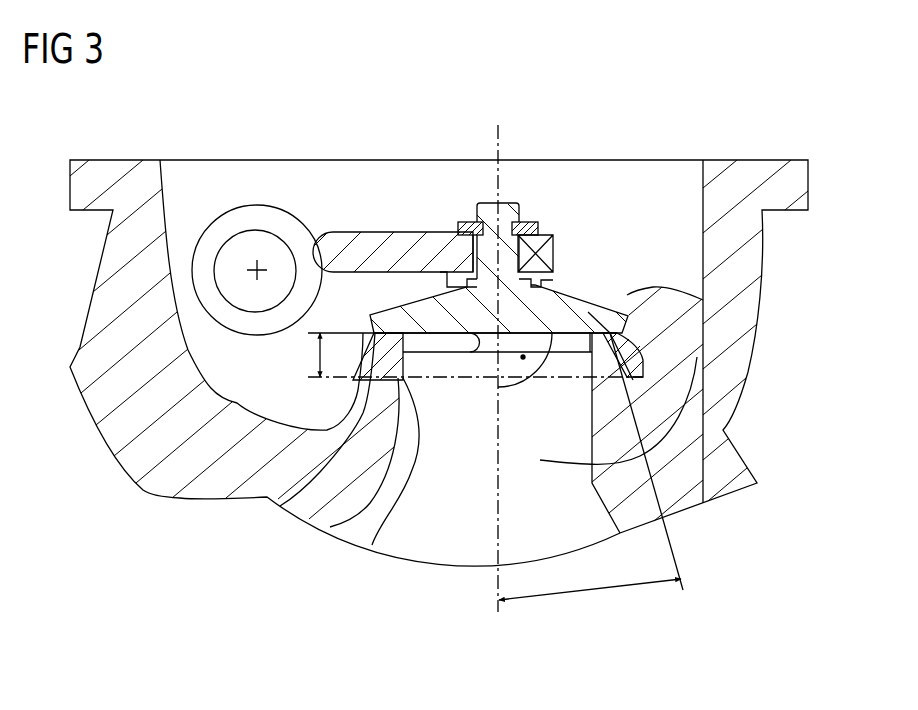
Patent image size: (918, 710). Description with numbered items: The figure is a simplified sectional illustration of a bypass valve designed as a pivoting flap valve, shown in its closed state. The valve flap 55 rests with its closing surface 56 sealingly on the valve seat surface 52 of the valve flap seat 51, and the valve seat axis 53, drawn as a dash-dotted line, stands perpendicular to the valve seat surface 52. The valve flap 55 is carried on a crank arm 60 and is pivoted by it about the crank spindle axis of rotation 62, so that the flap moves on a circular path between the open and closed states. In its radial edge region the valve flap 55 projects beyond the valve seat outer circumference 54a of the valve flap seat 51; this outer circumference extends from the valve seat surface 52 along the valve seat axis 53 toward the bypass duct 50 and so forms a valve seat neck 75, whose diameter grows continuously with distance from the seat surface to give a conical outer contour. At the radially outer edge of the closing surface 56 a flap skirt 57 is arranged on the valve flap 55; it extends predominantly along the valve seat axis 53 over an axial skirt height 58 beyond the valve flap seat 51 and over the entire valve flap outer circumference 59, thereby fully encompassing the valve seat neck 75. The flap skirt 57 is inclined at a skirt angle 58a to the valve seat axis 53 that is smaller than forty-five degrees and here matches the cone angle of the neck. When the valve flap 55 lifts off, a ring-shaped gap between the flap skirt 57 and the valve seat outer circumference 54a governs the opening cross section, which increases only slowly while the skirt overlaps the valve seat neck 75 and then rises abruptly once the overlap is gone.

The bypass duct 50 is at (724, 432).
The valve flap seat 51 is at (470, 353).
The valve seat surface 52 is at (703, 300).
The valve seat axis 53 is at (497, 580).
The valve seat outer circumference 54a is at (632, 340).
The valve flap 55 is at (540, 317).
The closing surface 56 is at (424, 354).
The flap skirt 57 is at (318, 418).
The skirt height 58 is at (320, 355).
The skirt angle 58a is at (587, 593).
The valve flap outer circumference 59 is at (697, 357).
The crank arm 60 is at (363, 255).
The crank spindle axis of rotation 62 is at (253, 270).
The valve seat neck 75 is at (372, 545).